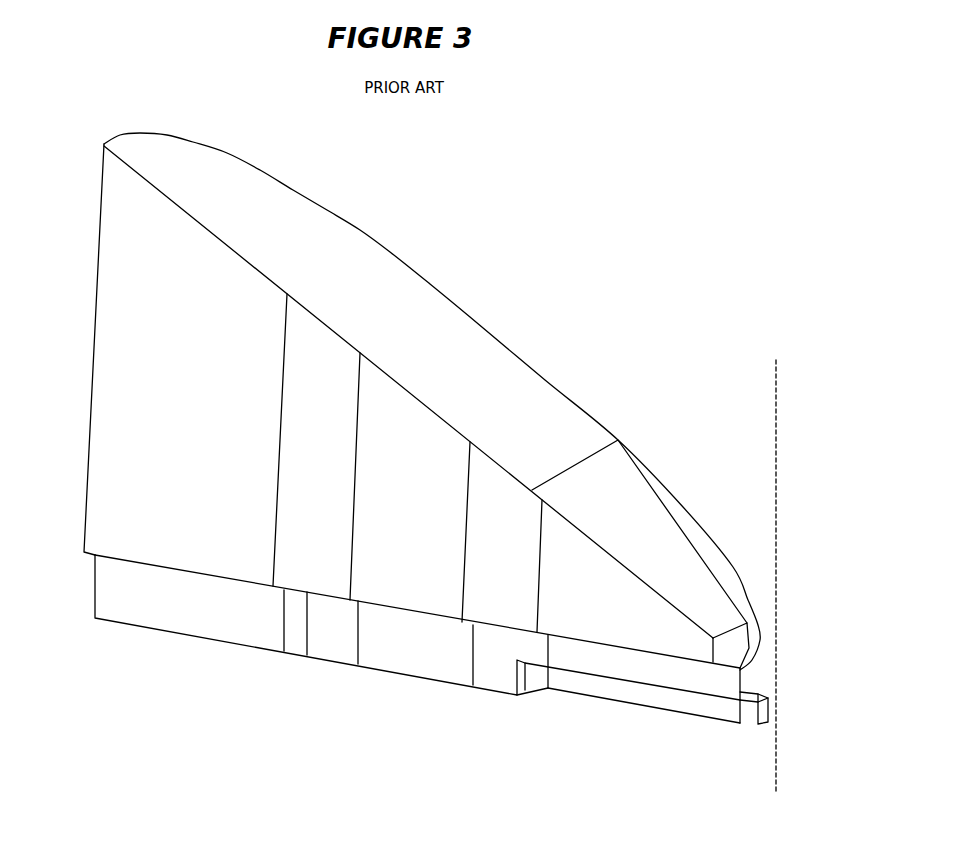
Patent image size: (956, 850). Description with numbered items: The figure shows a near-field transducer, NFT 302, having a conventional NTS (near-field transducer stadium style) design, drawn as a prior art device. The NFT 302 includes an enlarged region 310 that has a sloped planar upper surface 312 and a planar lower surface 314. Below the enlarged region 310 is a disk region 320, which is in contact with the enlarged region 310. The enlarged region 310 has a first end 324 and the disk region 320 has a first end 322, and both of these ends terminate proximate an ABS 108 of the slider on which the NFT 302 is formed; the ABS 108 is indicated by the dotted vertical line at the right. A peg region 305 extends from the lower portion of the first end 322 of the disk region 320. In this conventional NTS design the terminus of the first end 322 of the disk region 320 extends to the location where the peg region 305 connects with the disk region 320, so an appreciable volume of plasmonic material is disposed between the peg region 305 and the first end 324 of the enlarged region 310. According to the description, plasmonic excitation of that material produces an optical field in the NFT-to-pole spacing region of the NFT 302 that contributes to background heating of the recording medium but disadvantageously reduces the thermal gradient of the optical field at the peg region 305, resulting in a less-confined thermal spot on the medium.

The near-field transducer 302 is at (547, 176).
The enlarged region 310 is at (123, 253).
The sloped planar upper surface 312 is at (425, 310).
The planar lower surface 314 is at (212, 575).
The disk region 320 is at (102, 593).
The first end of disk region 322 is at (743, 678).
The first end of enlarged region 324 is at (730, 640).
The peg region 305 is at (766, 722).
The ABS 108 is at (776, 416).